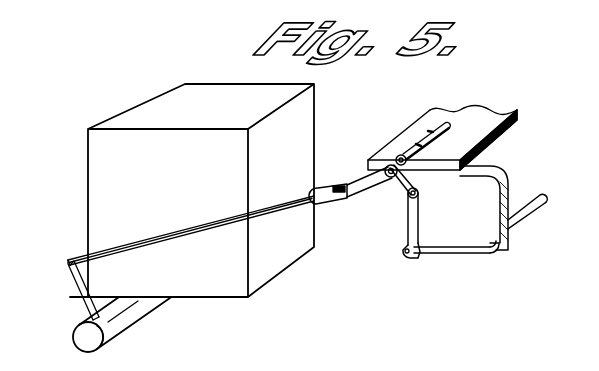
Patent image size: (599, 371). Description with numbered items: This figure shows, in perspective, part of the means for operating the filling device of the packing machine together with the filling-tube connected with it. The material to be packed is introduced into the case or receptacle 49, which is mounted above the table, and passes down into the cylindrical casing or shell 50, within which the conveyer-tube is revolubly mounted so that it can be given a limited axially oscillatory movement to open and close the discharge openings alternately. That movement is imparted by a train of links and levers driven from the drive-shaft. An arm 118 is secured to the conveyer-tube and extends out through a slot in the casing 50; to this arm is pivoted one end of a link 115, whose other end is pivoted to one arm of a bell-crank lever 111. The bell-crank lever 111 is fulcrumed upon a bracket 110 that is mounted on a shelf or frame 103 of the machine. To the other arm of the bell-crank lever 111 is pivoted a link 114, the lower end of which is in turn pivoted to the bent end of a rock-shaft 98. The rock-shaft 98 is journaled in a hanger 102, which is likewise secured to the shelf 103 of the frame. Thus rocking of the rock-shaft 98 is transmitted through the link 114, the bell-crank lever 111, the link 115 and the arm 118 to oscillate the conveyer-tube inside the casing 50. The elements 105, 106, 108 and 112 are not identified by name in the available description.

The case or receptacle 49 is at (192, 190).
The cylindrical casing or shell 50 is at (138, 310).
The rock-shaft 98 is at (541, 209).
The hanger 102 is at (508, 182).
The shelf or frame 103 is at (474, 124).
The connecting rod 105 is at (492, 252).
The slot 106 is at (437, 137).
The pin 108 is at (398, 160).
The bracket 110 is at (404, 168).
The bell-crank lever 111 is at (360, 190).
The link 112 is at (399, 177).
The link 114 is at (418, 220).
The link 115 is at (198, 231).
The arm 118 is at (67, 272).